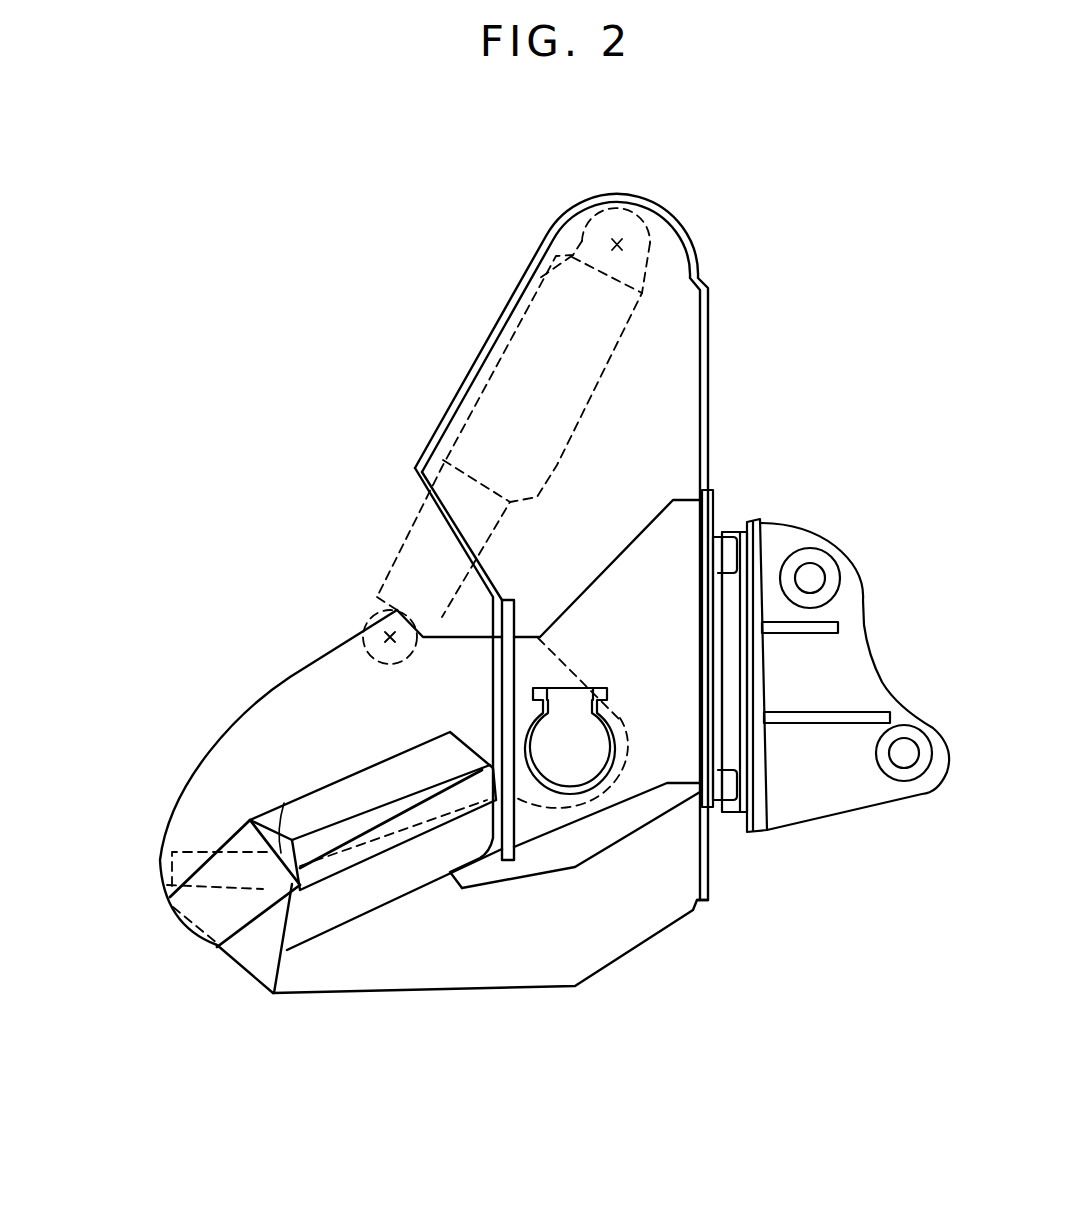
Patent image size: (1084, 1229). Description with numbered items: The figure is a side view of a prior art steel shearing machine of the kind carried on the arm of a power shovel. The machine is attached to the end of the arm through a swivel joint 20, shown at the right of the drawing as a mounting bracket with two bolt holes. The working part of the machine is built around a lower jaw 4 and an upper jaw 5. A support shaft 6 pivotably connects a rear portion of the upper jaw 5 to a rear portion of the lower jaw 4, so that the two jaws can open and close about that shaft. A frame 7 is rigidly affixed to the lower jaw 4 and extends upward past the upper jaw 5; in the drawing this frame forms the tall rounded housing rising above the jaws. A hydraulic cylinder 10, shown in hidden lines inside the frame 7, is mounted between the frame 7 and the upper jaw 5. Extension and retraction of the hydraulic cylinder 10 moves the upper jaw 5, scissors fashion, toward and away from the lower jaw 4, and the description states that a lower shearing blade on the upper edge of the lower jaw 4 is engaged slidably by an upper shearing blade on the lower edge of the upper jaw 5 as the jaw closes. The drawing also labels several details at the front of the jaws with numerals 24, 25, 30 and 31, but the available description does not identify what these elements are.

The lower jaw 4 is at (620, 933).
The upper jaw 5 is at (298, 693).
The support shaft 6 is at (588, 747).
The frame 7 is at (670, 390).
The hydraulic cylinder 10 is at (547, 353).
The swivel joint 20 is at (768, 540).
The hidden recess 24 is at (160, 862).
The block 25 is at (460, 777).
The wedge 30 is at (277, 903).
The bar 31 is at (445, 810).